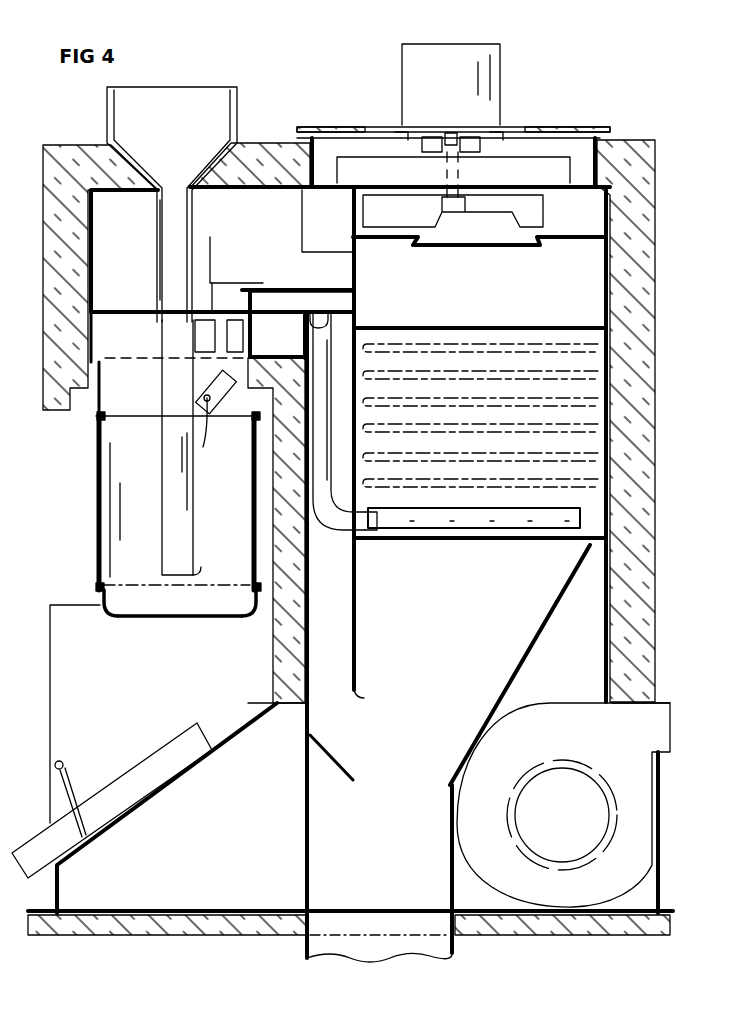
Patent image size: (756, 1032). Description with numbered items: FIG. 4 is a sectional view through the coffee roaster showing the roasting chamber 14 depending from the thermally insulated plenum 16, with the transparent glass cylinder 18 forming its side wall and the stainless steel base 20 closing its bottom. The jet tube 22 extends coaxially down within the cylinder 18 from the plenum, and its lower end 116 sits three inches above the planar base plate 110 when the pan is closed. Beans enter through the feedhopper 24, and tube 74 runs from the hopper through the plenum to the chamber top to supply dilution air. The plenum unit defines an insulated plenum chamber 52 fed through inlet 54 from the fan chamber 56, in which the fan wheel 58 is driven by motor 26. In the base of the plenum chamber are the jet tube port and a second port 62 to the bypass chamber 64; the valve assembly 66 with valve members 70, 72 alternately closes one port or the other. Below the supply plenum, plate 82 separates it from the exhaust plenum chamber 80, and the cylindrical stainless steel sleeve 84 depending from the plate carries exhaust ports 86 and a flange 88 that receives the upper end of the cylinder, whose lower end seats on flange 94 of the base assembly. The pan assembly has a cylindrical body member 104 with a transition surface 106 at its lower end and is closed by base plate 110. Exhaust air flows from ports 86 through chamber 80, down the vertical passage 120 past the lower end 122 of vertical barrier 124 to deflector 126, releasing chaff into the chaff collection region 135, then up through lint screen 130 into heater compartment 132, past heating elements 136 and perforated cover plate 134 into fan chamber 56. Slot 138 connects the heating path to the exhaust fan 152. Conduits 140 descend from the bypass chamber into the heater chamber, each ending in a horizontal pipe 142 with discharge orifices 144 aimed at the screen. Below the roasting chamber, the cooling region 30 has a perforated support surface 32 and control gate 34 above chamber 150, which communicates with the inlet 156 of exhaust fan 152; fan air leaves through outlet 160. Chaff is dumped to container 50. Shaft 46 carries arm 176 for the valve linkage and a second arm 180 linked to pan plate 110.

The coffee roasting chamber 14 is at (83, 513).
The thermally insulated plenum 16 is at (58, 145).
The transparent glass cylinder 18 is at (96, 482).
The stainless steel base 20 is at (251, 628).
The tube 22 is at (162, 472).
The feedhopper 24 is at (239, 100).
The motor 26 is at (502, 86).
The cooling region 30 is at (78, 696).
The perforated support surface 32 is at (165, 772).
The control gate 34 is at (68, 794).
The shaft 46 is at (206, 435).
The container 50 is at (305, 950).
The plenum chamber 52 is at (106, 221).
The inlet 54 is at (302, 214).
The fan chamber 56 is at (425, 291).
The fan wheel 58 is at (545, 213).
The second port 62 is at (262, 287).
The bypass chamber 64 is at (336, 298).
The valve assembly 66 is at (227, 275).
The valve member 70 is at (212, 249).
The valve member 72 is at (293, 290).
The tube 74 is at (158, 238).
The exhaust plenum chamber 80 is at (281, 341).
The plate 82 is at (110, 312).
The cylindrical stainless steel sleeve 84 is at (103, 402).
The exhaust ports 86 is at (208, 343).
The flange 88 is at (96, 420).
The flange 94 is at (98, 588).
The cylindrical body member 104 is at (98, 596).
The transition surface 106 is at (108, 616).
The planar base plate 110 is at (160, 619).
The lower end 116 is at (199, 578).
The vertical passage 120 is at (314, 646).
The lower end 122 is at (364, 699).
The vertical barrier 124 is at (356, 606).
The deflector 126 is at (352, 782).
The lint screen 130 is at (428, 540).
The heater compartment 132 is at (423, 399).
The perforated cover plate 134 is at (479, 326).
The chaff collection region 135 is at (359, 873).
The heating elements 136 is at (573, 326).
The slot 138 is at (604, 548).
The conduits 140 is at (325, 527).
The pipe 142 is at (478, 530).
The discharge orifices 144 is at (531, 530).
The chamber 150 is at (190, 863).
The exhaust fan 152 is at (640, 879).
The inlet 156 is at (566, 773).
The outlet 160 is at (672, 718).
The arm 176 is at (222, 410).
The second arm 180 is at (224, 392).